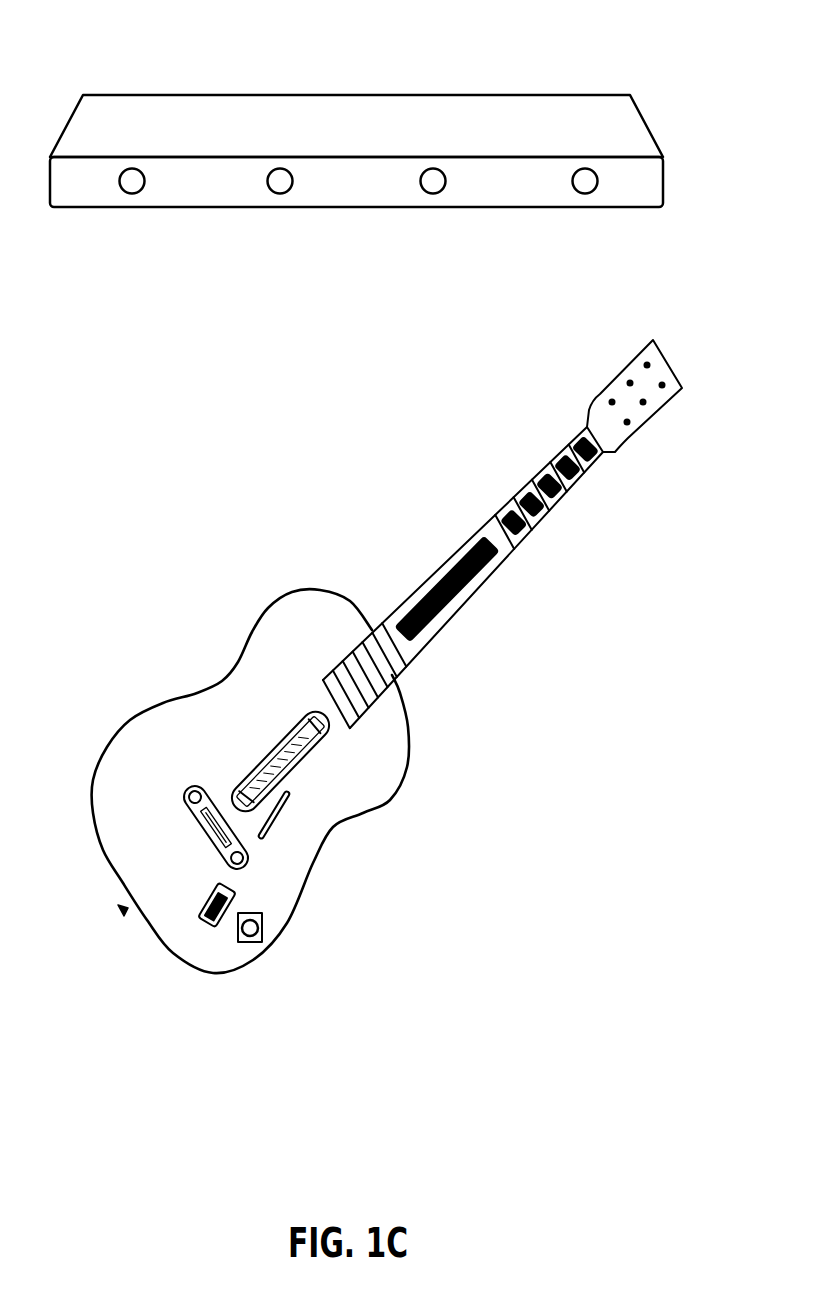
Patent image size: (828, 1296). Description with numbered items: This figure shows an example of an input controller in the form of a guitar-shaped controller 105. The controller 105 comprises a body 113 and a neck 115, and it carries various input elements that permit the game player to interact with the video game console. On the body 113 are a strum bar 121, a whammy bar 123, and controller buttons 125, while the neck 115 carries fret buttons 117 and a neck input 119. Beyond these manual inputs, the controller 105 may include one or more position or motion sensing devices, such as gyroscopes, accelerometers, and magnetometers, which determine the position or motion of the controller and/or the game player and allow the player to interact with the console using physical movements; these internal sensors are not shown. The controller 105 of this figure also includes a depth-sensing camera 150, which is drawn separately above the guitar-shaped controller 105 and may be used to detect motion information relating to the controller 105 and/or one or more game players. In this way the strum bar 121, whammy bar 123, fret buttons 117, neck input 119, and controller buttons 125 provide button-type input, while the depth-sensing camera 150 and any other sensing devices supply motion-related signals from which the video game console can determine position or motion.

The guitar-shaped controller 105 is at (395, 807).
The body 113 is at (281, 597).
The neck 115 is at (509, 558).
The fret buttons 117 is at (498, 513).
The neck input 119 is at (428, 582).
The strum bar 121 is at (278, 738).
The whammy bar 123 is at (288, 814).
The controller buttons 125 is at (208, 830).
The depth-sensing camera 150 is at (613, 88).